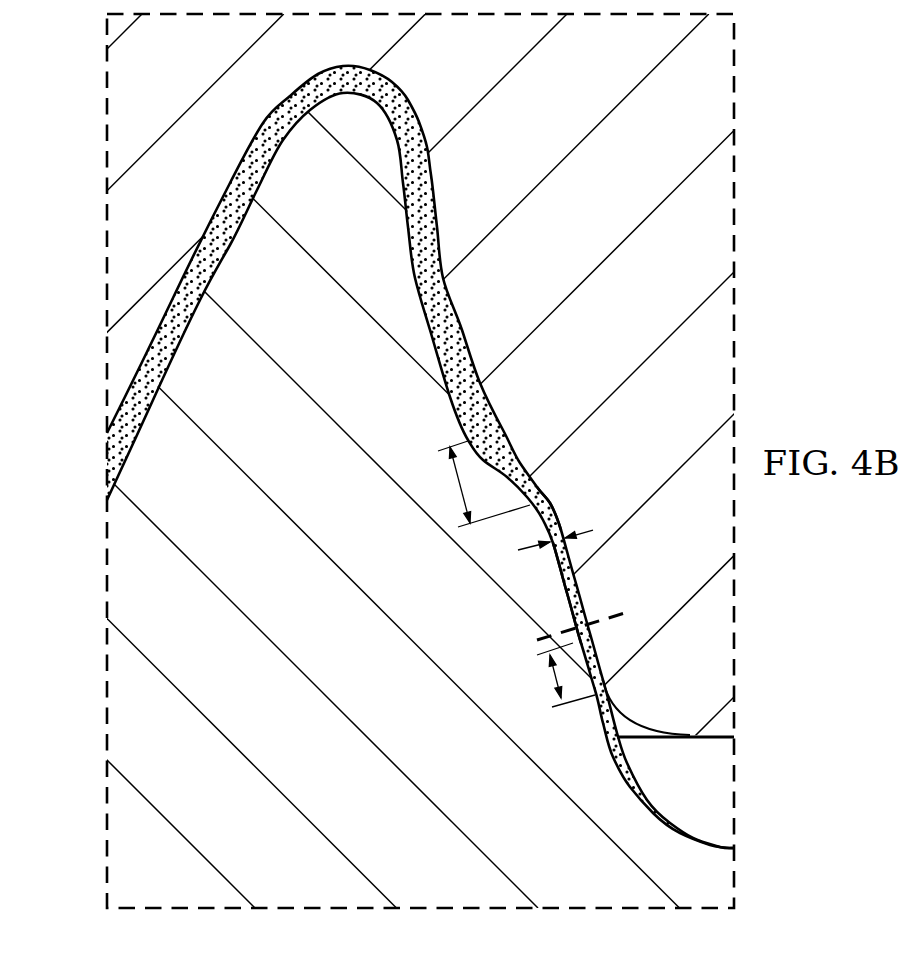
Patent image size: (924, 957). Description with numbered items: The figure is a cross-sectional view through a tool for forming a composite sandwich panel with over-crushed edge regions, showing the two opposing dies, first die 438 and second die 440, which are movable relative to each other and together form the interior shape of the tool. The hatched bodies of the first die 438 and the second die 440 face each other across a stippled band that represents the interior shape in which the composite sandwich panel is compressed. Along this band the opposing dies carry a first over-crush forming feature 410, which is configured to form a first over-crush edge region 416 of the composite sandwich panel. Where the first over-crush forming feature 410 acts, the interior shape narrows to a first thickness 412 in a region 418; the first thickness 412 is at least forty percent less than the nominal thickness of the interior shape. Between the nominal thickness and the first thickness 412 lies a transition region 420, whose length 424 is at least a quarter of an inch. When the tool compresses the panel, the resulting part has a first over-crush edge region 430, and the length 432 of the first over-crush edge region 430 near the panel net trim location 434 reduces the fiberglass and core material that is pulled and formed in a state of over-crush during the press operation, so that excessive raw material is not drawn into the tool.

The first over-crush forming feature 410 is at (515, 585).
The first thickness 412 is at (591, 531).
The first over-crush edge region 416 is at (502, 546).
The region 418 is at (562, 492).
The transition region 420 is at (513, 413).
The length of transition region 424 is at (460, 490).
The first over-crush edge region 430 is at (632, 720).
The length of first over-crush edge region 432 is at (552, 677).
The panel net trim location 434 is at (625, 615).
The first die 438 is at (565, 223).
The second die 440 is at (312, 645).